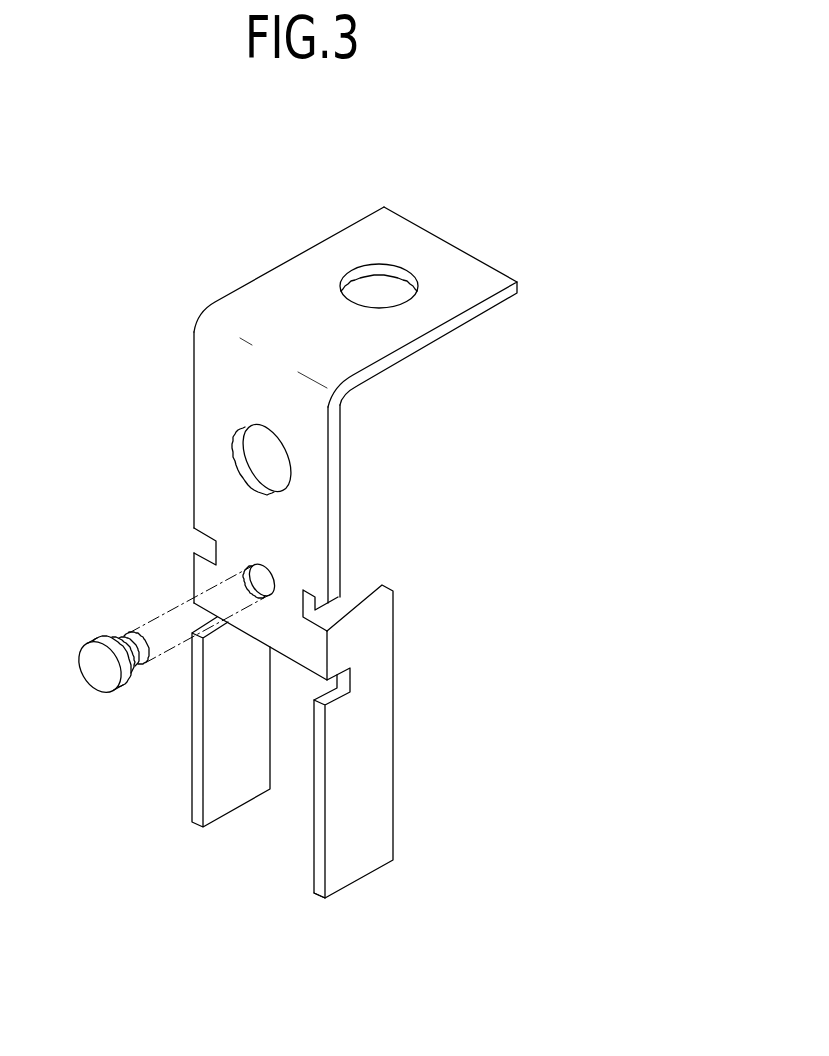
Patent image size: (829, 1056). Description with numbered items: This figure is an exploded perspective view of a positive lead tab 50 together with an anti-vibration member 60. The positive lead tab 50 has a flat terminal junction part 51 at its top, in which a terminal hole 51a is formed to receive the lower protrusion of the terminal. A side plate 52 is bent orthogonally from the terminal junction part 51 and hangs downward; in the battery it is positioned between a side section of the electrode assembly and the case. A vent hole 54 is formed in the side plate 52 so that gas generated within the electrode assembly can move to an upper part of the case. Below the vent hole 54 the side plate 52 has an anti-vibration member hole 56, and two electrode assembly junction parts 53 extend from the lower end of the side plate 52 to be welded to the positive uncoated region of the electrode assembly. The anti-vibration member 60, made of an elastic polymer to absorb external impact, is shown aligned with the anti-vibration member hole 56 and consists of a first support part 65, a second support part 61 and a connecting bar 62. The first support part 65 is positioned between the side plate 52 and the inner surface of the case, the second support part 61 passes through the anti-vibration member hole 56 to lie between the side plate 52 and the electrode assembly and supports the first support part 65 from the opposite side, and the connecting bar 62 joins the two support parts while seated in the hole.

The positive lead tab 50 is at (319, 527).
The terminal junction part 51 is at (453, 272).
The terminal hole 51a is at (380, 263).
The side plate 52 is at (212, 428).
The electrode assembly junction part 53 is at (373, 780).
The vent hole 54 is at (288, 457).
The anti-vibration member hole 56 is at (270, 570).
The anti-vibration member 60 is at (150, 660).
The second support part 61 is at (131, 634).
The connecting bar 62 is at (132, 672).
The first support part 65 is at (92, 677).